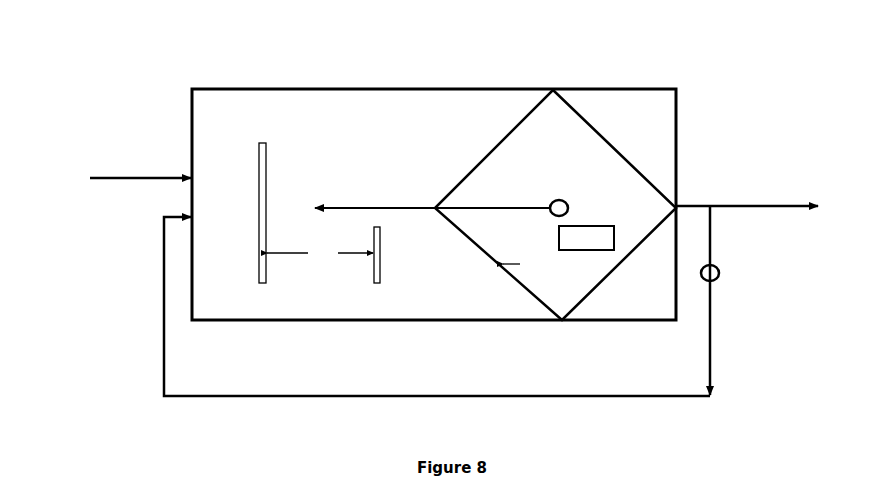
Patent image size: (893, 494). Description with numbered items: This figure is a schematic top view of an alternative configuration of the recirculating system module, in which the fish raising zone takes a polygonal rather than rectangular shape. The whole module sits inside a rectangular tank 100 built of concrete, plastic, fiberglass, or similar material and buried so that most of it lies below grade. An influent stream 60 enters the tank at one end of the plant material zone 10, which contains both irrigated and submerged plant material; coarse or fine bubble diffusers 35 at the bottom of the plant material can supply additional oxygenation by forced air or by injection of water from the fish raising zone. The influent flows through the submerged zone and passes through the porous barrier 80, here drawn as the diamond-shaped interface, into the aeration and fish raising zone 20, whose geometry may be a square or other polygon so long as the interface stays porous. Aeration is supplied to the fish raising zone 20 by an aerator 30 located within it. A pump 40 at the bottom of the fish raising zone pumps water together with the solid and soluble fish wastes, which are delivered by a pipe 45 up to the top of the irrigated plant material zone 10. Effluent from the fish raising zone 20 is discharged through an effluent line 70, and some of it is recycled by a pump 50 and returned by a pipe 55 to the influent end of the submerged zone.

The rectangular tank 100 is at (190, 87).
The plant material zone 10 is at (276, 199).
The bubble diffusers 35 is at (323, 255).
The influent stream 60 is at (140, 191).
The aeration and fish raising zone 20 is at (555, 205).
The pipe 45 is at (432, 220).
The pump 40 is at (572, 209).
The aerator 30 is at (586, 238).
The porous barrier 80 is at (525, 265).
The effluent line 70 is at (747, 220).
The pump 50 is at (730, 274).
The pipe 55 is at (450, 301).